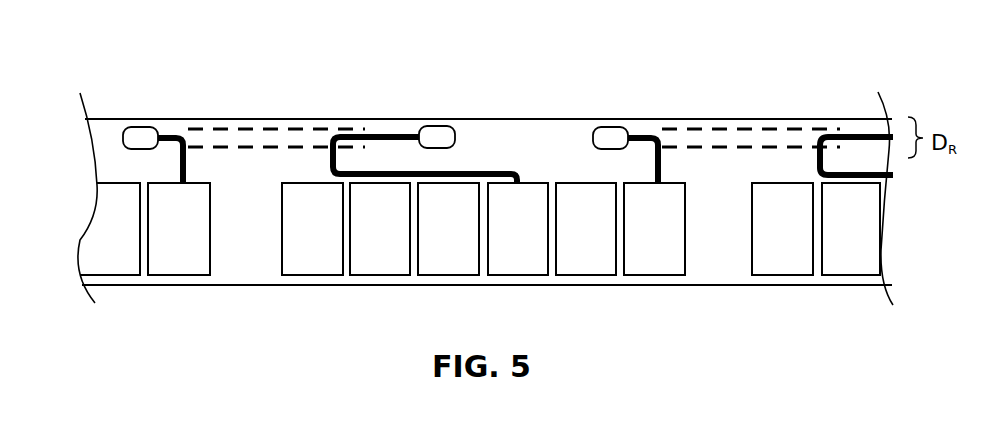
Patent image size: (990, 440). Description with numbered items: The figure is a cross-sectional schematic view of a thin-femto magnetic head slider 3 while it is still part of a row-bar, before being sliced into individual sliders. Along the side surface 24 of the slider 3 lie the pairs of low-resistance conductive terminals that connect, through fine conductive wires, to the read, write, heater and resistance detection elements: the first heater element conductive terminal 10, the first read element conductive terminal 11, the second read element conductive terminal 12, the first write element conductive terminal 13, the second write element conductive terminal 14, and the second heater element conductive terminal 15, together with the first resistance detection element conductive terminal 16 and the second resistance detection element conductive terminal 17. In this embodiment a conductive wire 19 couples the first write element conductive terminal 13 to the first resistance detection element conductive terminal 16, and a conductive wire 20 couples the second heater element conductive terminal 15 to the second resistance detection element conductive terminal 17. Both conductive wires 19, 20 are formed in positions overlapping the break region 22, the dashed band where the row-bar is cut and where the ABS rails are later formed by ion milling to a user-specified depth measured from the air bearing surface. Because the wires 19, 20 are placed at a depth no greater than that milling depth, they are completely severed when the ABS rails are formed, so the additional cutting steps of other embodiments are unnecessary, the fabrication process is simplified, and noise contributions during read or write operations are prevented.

The thin-femto magnetic head slider 3 is at (510, 86).
The first heater element conductive terminal 10 is at (547, 229).
The first read element conductive terminal 11 is at (615, 229).
The second read element conductive terminal 12 is at (448, 229).
The first write element conductive terminal 13 is at (518, 229).
The second write element conductive terminal 14 is at (348, 229).
The second heater element conductive terminal 15 is at (416, 229).
The first resistance detection element conductive terminal 16 is at (437, 127).
The second resistance detection element conductive terminal 17 is at (142, 128).
The conductive wire 19 is at (370, 134).
The conductive wire 20 is at (186, 129).
The break region 22 is at (259, 145).
The side surface 24 is at (528, 146).